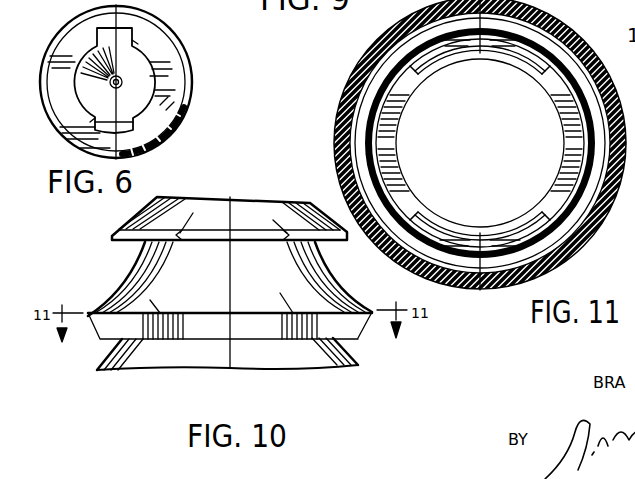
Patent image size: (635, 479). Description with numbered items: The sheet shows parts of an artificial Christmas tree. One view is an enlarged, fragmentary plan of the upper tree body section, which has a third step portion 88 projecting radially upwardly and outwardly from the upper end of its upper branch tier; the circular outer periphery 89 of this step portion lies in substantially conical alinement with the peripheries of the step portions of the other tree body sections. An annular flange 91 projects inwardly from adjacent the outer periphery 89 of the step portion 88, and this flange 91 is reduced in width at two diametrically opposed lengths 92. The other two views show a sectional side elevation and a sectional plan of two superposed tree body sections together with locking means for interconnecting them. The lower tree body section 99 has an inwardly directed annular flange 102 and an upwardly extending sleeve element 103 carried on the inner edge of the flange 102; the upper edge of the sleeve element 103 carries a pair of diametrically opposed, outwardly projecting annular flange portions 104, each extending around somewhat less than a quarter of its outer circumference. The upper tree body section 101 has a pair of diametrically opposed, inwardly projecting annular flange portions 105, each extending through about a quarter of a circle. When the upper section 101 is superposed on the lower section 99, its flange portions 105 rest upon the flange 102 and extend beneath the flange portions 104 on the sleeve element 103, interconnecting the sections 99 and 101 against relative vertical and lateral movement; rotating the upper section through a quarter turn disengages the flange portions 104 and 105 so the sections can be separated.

In FIG. 6, the third step portion 88 is at (140, 68).
In FIG. 6, the circular outer periphery 89 is at (192, 58).
In FIG. 6, the annular flange 91 is at (163, 104).
In FIG. 6, the diametrically opposed lengths 92 is at (136, 45).
In FIG. 10, the tree body section 99 is at (163, 368).
In FIG. 10, the tree body section 101 is at (247, 200).
In FIG. 11, the tree body section 101 is at (361, 58).
In FIG. 10, the annular flange 102 is at (320, 343).
In FIG. 11, the annular flange 102 is at (425, 228).
In FIG. 10, the sleeve element 103 is at (180, 333).
In FIG. 11, the sleeve element 103 is at (533, 72).
In FIG. 10, the annular flange portions 104 is at (307, 290).
In FIG. 11, the annular flange portions 104 is at (375, 135).
In FIG. 10, the annular flange portions 105 is at (158, 308).
In FIG. 11, the annular flange portions 105 is at (412, 85).